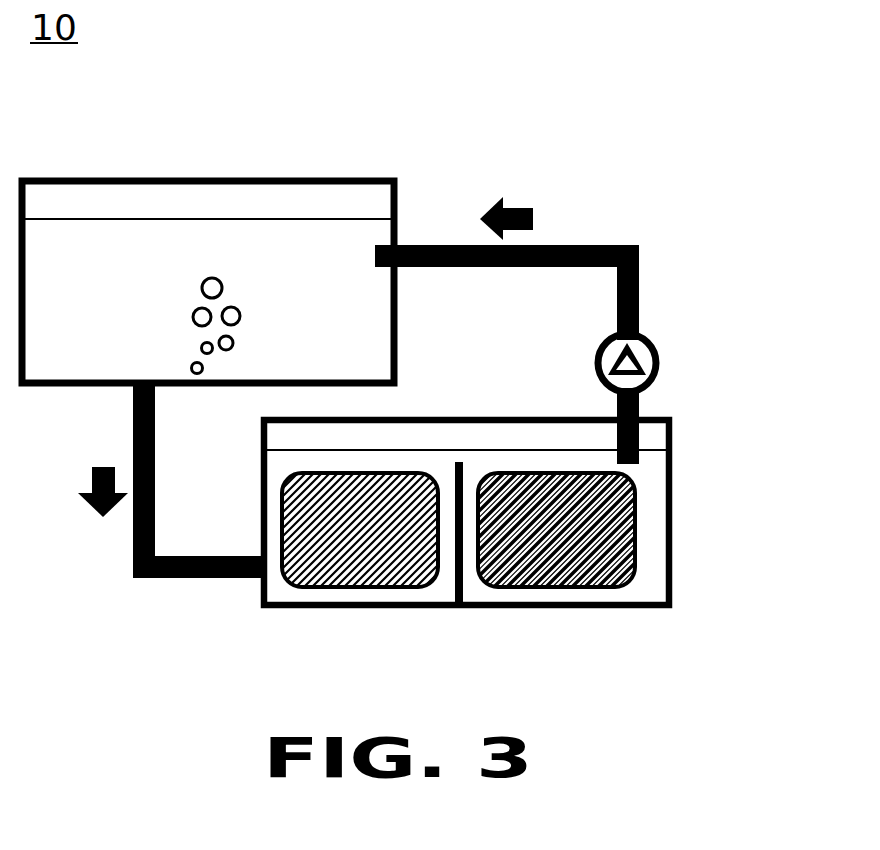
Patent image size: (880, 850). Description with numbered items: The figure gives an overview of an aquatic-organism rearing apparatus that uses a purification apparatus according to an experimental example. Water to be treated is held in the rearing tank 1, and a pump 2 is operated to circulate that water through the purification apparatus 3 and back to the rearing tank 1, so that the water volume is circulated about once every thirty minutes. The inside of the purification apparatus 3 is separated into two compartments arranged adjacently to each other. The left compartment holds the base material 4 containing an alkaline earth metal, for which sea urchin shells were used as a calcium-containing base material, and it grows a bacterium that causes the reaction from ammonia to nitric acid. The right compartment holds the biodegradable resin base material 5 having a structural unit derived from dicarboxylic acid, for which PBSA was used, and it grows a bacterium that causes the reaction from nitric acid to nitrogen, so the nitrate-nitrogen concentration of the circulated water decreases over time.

The rearing tank 1 is at (365, 180).
The pump 2 is at (660, 362).
The purification apparatus 3 is at (672, 517).
The base material containing an alkaline earth metal 4 is at (335, 587).
The biodegradable resin base material 5 is at (540, 587).